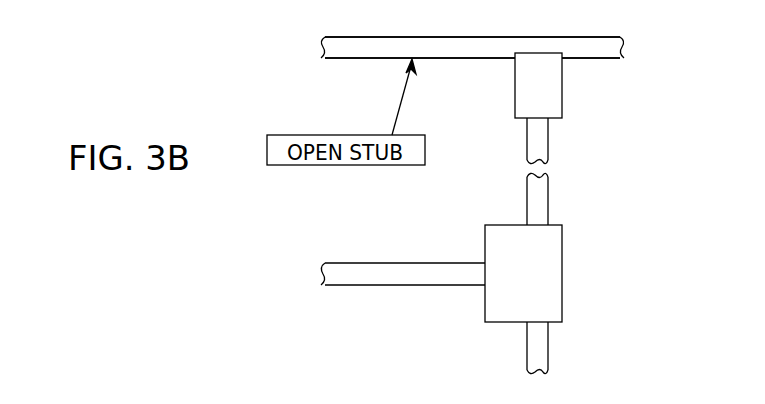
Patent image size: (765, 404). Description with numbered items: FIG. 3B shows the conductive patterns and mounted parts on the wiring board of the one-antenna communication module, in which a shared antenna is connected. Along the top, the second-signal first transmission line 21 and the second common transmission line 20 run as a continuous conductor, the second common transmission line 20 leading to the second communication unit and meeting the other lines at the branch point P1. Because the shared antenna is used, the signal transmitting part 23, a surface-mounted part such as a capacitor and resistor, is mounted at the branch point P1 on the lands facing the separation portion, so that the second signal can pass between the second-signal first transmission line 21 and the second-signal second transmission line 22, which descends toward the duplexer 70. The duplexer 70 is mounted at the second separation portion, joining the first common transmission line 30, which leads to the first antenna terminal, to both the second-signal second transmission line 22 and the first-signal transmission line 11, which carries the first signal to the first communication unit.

The second common transmission line 20 is at (614, 57).
The second-signal first transmission line 21 is at (365, 57).
The branch point P1 is at (514, 65).
The signal transmitting part 23 is at (558, 109).
The second-signal second transmission line 22 is at (530, 145).
The duplexer 70 is at (556, 247).
The first common transmission line 30 is at (361, 272).
The first-signal transmission line 11 is at (541, 346).